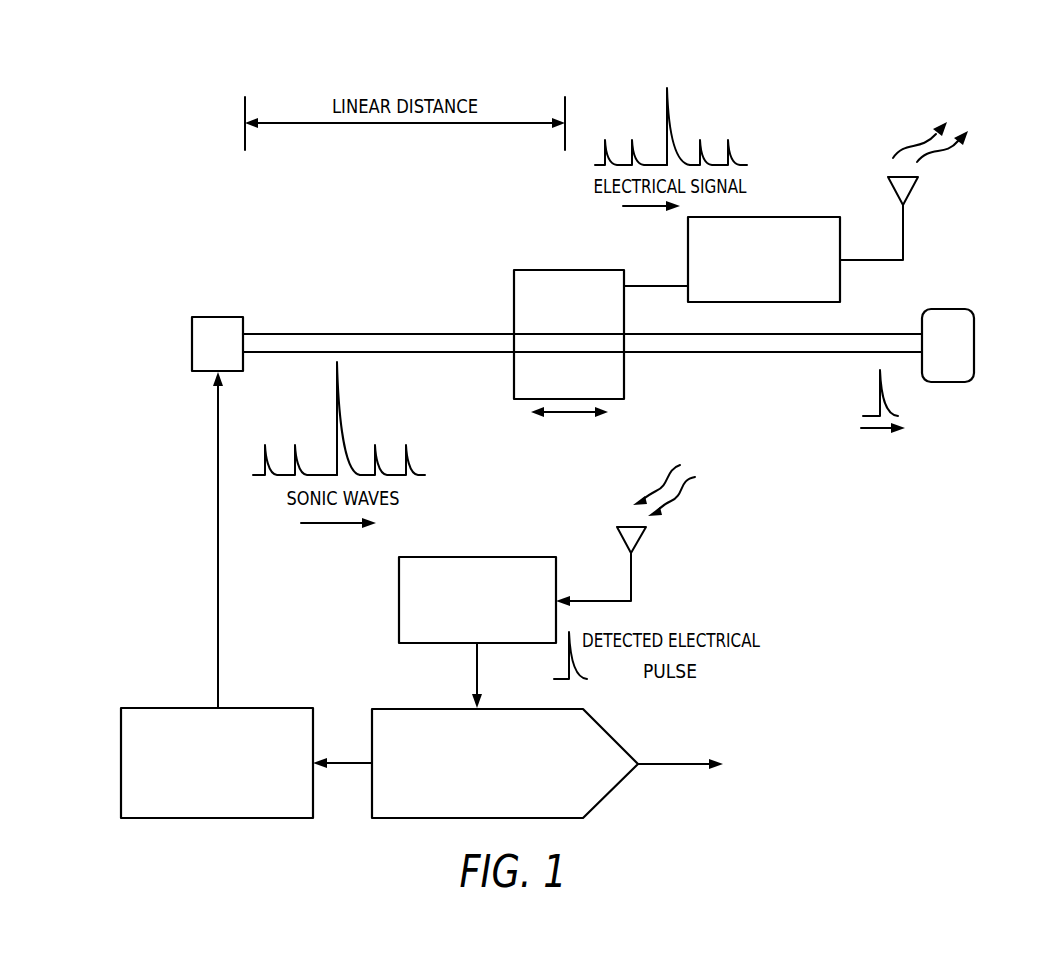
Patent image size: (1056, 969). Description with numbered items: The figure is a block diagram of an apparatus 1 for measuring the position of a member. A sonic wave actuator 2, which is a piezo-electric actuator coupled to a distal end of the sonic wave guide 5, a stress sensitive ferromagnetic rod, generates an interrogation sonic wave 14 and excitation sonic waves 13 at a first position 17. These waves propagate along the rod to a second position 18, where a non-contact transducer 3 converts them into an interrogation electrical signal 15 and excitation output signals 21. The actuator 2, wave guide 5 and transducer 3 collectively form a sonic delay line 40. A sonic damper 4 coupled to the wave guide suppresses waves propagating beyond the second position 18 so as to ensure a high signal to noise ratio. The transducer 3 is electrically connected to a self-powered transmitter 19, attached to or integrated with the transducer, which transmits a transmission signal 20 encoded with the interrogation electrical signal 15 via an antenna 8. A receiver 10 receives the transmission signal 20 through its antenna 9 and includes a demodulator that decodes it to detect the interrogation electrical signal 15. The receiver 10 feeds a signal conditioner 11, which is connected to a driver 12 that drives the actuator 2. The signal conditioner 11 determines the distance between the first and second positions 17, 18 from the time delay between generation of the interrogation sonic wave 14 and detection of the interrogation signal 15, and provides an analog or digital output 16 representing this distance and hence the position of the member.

The apparatus 1 is at (936, 191).
The sonic wave actuator 2 is at (215, 308).
The non-contact transducer 3 is at (556, 258).
The sonic damper 4 is at (950, 309).
The sonic wave guide 5 is at (702, 368).
The antenna 8 is at (888, 190).
The antenna 9 is at (617, 540).
The receiver 10 is at (476, 557).
The signal conditioner 11 is at (410, 708).
The driver 12 is at (160, 708).
The excitation sonic waves 13 is at (268, 453).
The interrogation sonic wave 14 is at (340, 403).
The interrogation electrical signal 15 is at (668, 122).
The output 16 is at (679, 763).
The first position 17 is at (246, 333).
The second position 18 is at (573, 354).
The self-powered transmitter 19 is at (772, 217).
The transmission signal 20 is at (893, 158).
The excitation output signals 21 is at (607, 152).
The sonic delay line 40 is at (789, 419).